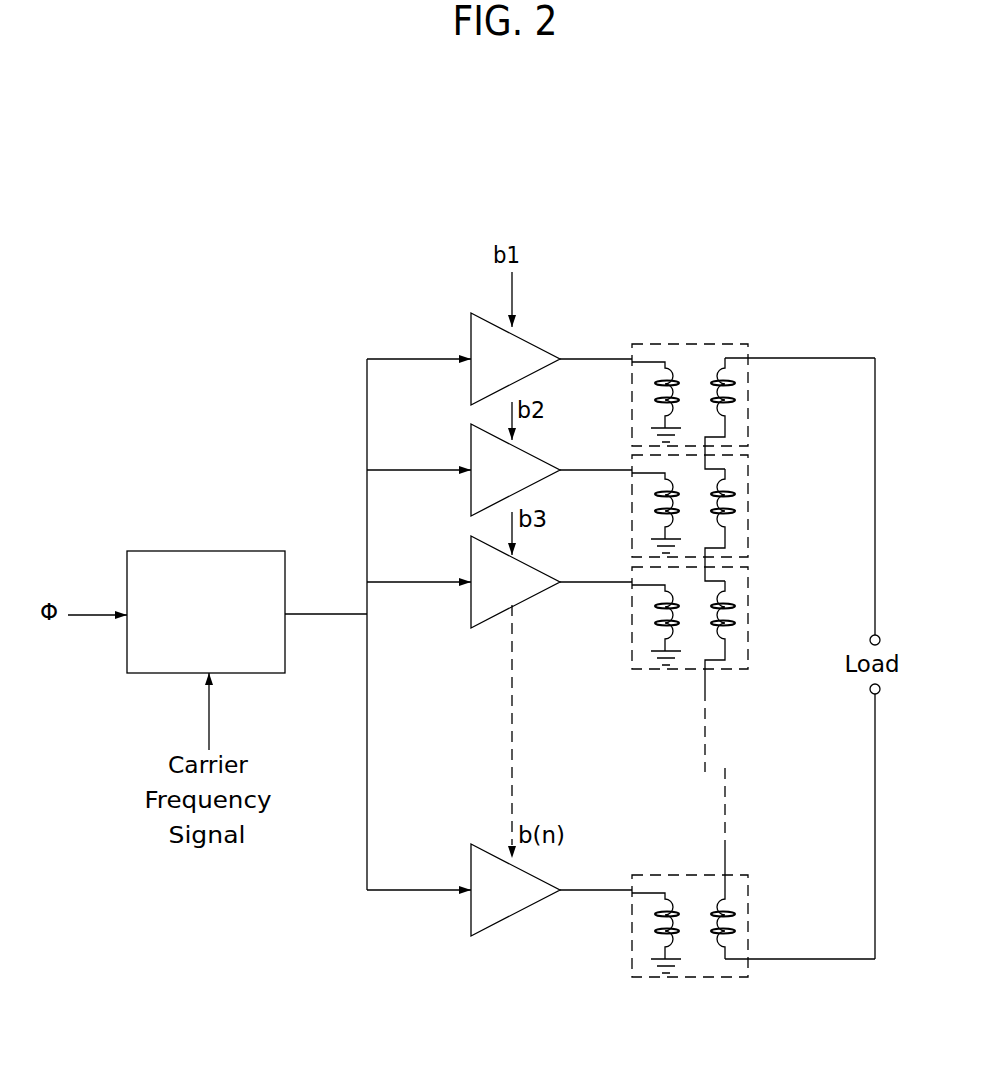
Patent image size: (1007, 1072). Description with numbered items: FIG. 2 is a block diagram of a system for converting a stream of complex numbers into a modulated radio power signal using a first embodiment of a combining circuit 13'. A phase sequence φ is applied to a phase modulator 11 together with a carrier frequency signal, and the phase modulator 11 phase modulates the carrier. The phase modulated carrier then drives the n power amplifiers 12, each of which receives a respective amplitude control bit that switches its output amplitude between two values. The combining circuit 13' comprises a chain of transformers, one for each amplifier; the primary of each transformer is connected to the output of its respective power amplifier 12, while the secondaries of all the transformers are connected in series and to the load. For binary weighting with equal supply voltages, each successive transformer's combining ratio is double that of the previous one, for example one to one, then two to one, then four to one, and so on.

The phase modulator 11 is at (248, 551).
The power amplifiers 12 is at (549, 452).
The combining circuit 13' is at (753, 615).